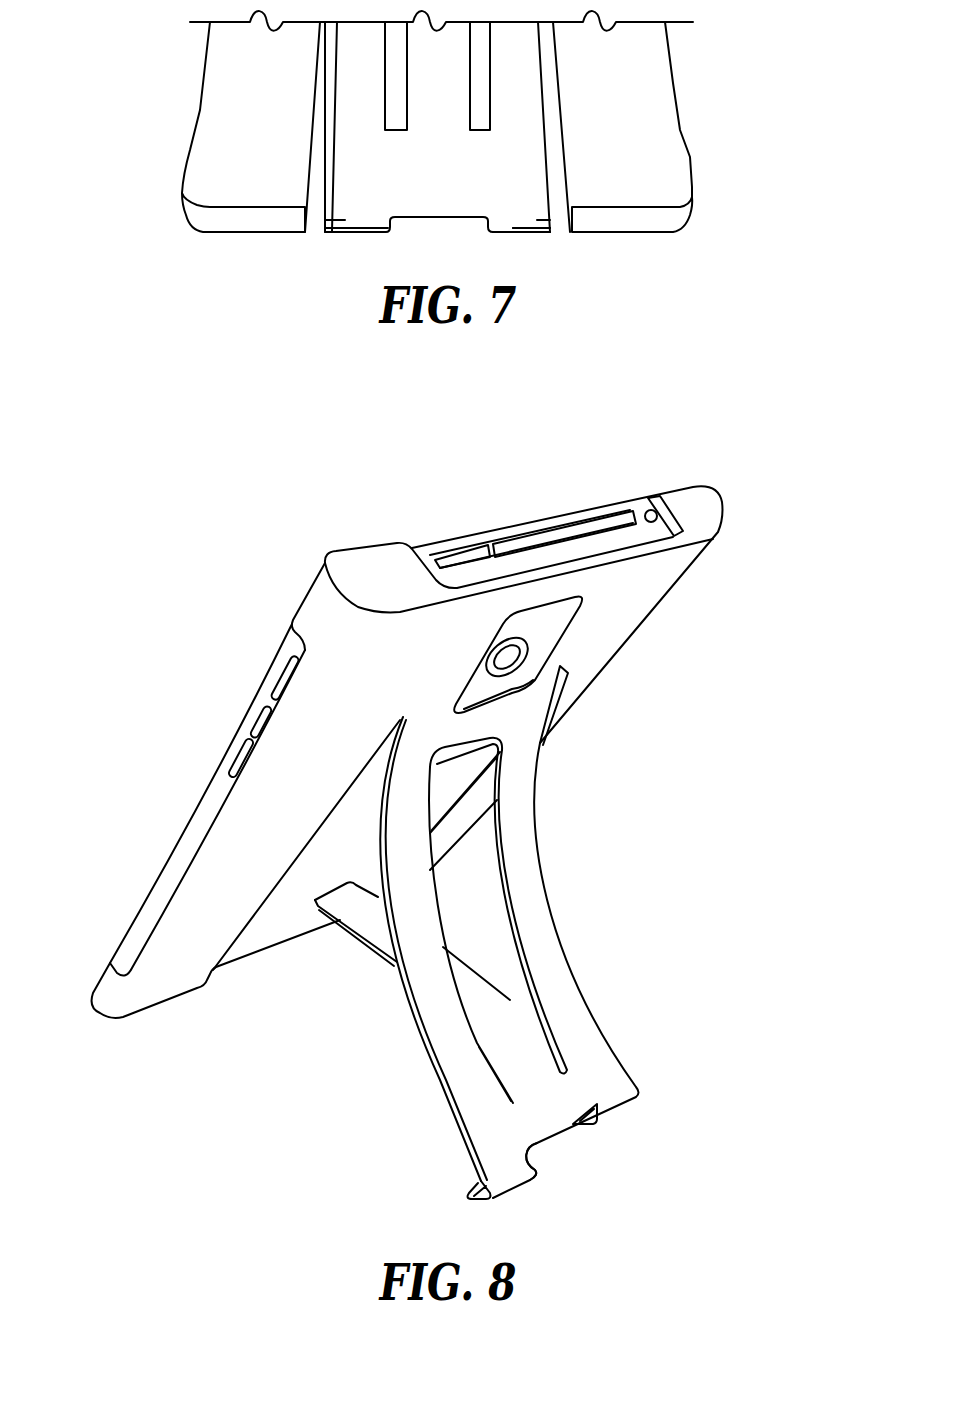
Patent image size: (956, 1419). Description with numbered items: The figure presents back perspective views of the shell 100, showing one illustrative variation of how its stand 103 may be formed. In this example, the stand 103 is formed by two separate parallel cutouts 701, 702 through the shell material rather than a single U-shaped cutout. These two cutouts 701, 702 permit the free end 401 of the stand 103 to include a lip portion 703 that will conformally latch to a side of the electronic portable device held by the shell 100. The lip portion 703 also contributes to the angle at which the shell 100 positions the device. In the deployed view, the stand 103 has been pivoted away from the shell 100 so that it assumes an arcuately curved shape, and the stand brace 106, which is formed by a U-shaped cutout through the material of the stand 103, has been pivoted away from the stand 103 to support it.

In FIG. 7, the shell 100 is at (230, 145).
In FIG. 7, the parallel cutout 701 is at (327, 73).
In FIG. 7, the parallel cutout 702 is at (552, 73).
In FIG. 7, the stand 103 is at (456, 187).
In FIG. 8, the stand 103 is at (530, 902).
In FIG. 7, the lip portion 703 is at (357, 222).
In FIG. 8, the lip portion 703 is at (480, 1187).
In FIG. 7, the free end 401 is at (518, 231).
In FIG. 8, the free end 401 is at (510, 1173).
In FIG. 8, the stand brace 106 is at (377, 920).